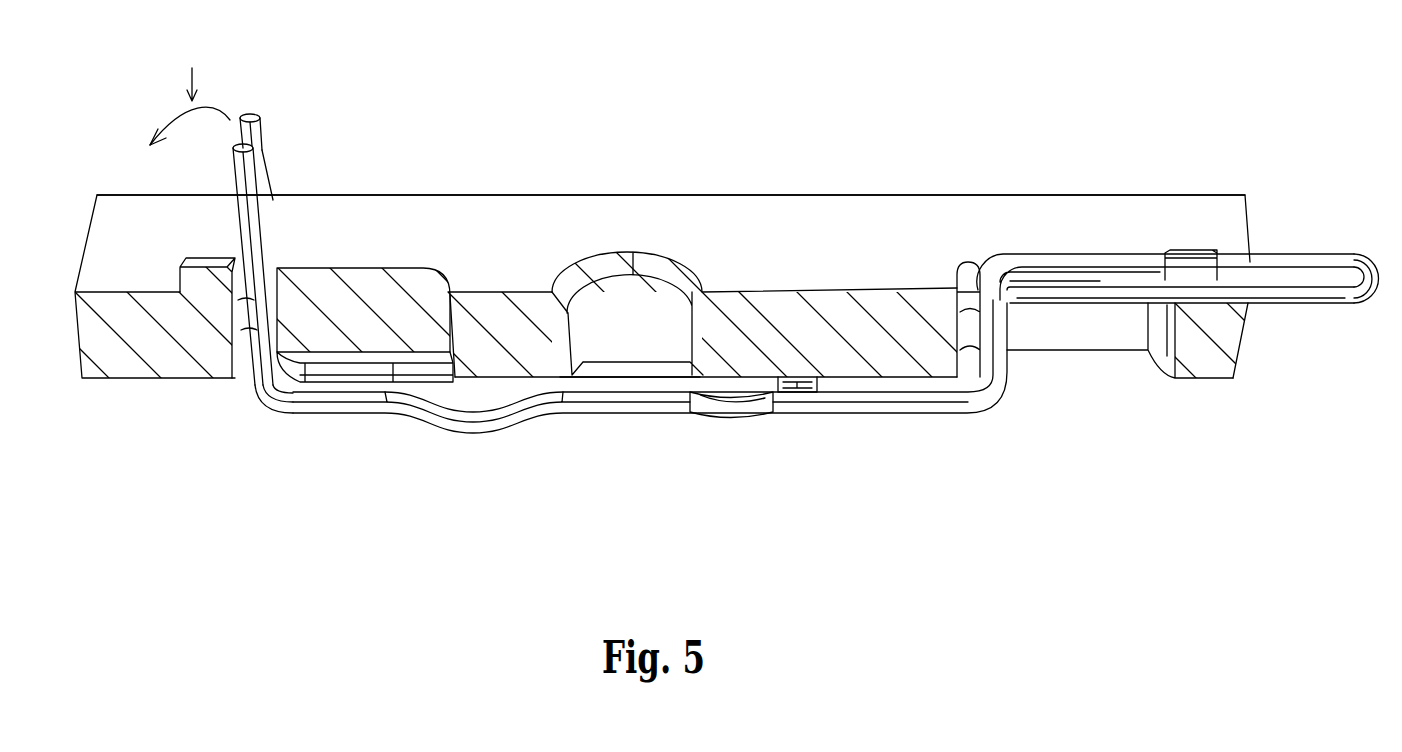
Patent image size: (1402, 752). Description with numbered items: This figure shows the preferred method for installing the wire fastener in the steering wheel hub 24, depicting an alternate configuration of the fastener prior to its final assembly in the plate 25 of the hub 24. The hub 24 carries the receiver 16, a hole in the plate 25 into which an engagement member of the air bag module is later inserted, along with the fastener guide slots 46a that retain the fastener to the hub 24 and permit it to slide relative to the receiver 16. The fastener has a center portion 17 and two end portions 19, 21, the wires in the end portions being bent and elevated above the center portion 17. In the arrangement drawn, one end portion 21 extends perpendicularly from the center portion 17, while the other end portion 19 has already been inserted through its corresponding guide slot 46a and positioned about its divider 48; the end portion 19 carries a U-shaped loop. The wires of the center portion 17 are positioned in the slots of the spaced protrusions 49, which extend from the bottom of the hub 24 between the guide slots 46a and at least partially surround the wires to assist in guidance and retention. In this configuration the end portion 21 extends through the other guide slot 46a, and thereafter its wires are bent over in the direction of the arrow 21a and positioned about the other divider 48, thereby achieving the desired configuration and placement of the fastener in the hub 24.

The receiver 16 is at (633, 347).
The center portion 17 is at (665, 413).
The end portion 19 is at (1082, 305).
The end portion 21 is at (273, 232).
The arrow 21a is at (190, 95).
The hub 24 is at (813, 226).
The plate 25 is at (850, 205).
The fastener guide slot 46a is at (345, 273).
The divider 48 is at (203, 278).
The protrusion 49 is at (813, 390).